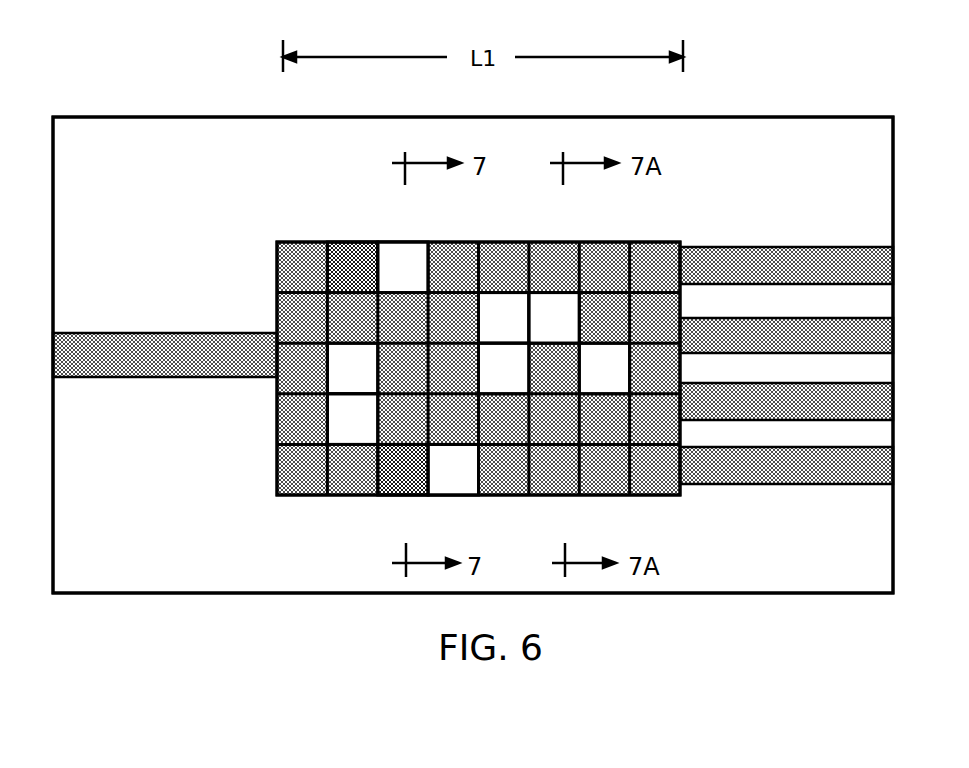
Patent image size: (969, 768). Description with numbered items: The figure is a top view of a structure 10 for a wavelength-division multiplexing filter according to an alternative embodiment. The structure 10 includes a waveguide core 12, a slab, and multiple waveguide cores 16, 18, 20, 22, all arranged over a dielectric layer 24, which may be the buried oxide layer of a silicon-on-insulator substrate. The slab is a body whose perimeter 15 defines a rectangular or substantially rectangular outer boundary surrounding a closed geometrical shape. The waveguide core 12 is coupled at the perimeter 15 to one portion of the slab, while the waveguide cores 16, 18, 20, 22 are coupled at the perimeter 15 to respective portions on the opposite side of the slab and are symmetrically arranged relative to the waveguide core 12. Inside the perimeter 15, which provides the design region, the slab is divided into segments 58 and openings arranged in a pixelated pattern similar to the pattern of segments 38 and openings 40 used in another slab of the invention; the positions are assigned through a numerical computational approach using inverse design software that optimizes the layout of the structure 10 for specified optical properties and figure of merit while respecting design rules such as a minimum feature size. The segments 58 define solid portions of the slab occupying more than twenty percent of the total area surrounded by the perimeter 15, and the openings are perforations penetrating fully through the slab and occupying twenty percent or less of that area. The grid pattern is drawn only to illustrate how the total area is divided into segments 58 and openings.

The structure 10 is at (152, 176).
The waveguide core 12 is at (195, 357).
The perimeter 15 is at (280, 313).
The waveguide core 16 is at (785, 473).
The waveguide core 18 is at (748, 398).
The waveguide core 20 is at (740, 333).
The waveguide core 22 is at (782, 268).
The dielectric layer 24 is at (140, 564).
The segments 38 is at (600, 258).
The openings 40 is at (417, 280).
The segments 58 is at (350, 264).